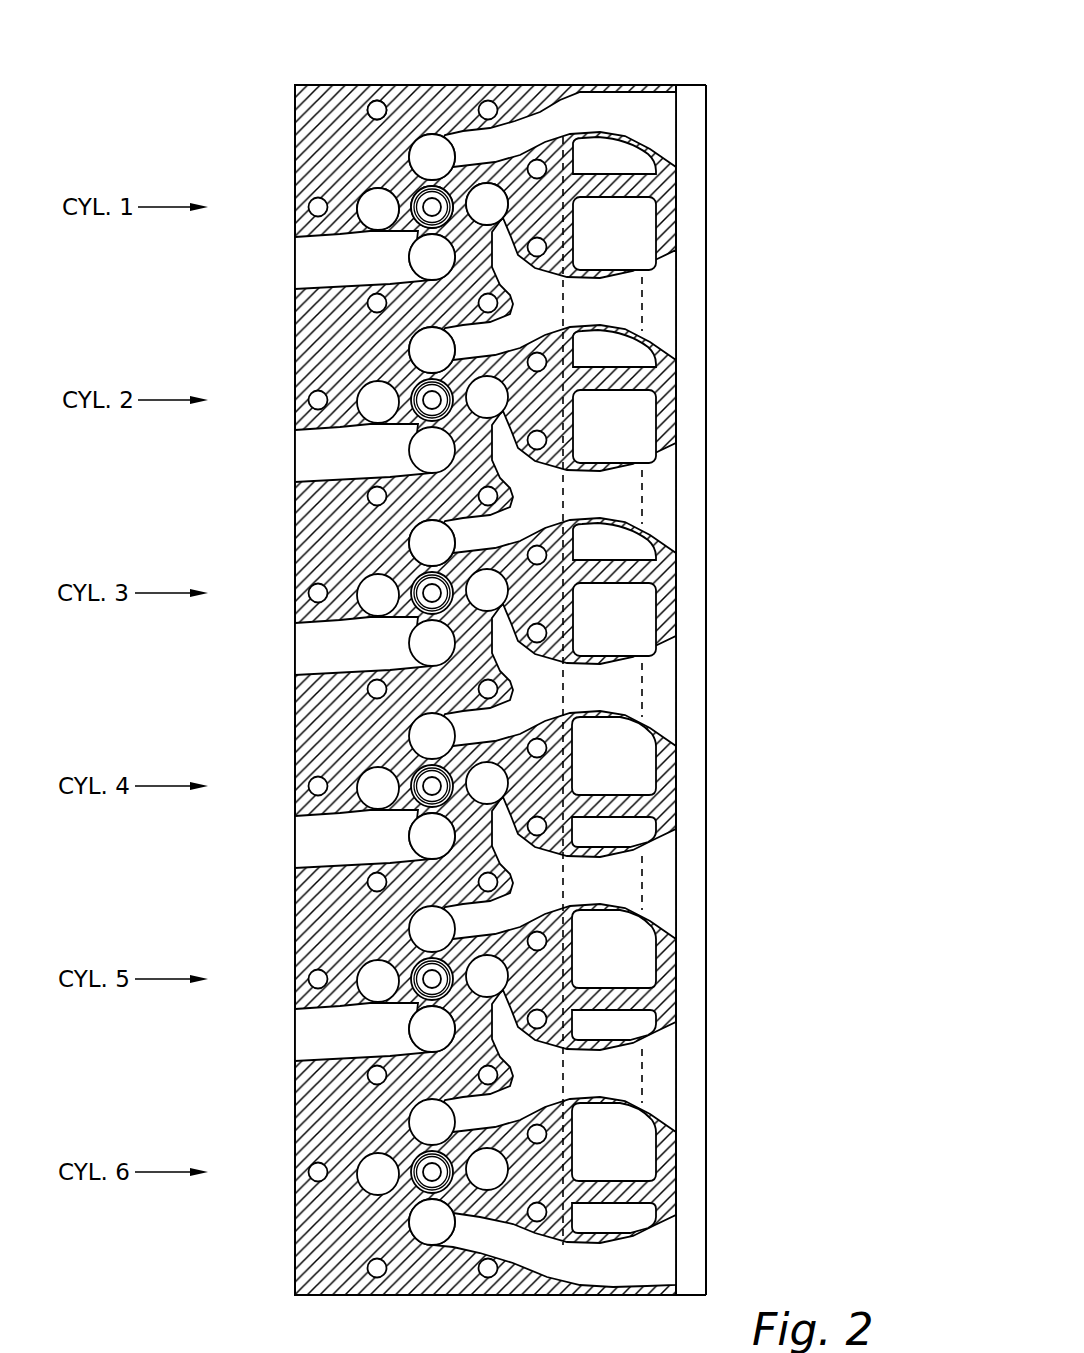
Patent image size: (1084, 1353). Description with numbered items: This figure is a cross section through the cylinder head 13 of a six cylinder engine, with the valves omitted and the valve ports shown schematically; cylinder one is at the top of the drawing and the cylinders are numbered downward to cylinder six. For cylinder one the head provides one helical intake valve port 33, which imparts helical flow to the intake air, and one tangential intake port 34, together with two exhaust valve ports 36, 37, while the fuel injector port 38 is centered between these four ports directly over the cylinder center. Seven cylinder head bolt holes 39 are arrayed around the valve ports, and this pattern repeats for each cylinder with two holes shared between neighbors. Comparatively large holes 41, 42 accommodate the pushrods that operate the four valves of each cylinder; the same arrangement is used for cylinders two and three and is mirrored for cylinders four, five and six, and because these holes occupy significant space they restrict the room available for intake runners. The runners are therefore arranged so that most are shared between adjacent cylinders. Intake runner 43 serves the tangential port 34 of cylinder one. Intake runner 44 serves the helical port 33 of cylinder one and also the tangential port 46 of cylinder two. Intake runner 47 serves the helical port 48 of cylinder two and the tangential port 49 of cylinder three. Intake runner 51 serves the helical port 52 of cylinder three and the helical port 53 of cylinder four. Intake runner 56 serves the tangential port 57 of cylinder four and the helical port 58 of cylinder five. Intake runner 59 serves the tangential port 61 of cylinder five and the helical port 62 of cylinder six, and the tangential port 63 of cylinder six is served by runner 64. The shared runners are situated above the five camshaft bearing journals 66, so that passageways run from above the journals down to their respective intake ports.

The cylinder head 13 is at (312, 555).
The helical intake valve port 33 is at (490, 183).
The tangential intake port 34 is at (437, 134).
The exhaust valve port 36 is at (357, 205).
The exhaust valve port 37 is at (410, 258).
The fuel injector port 38 is at (411, 203).
The cylinder head bolt holes 39 is at (377, 110).
The pushrod hole 41 is at (620, 156).
The pushrod hole 42 is at (620, 243).
The intake runner 43 is at (622, 120).
The intake runner 44 is at (620, 303).
The tangential port 46 is at (410, 348).
The intake runner 47 is at (620, 496).
The helical port 48 is at (513, 400).
The tangential port 49 is at (410, 541).
The intake runner 51 is at (620, 688).
The helical port 52 is at (510, 592).
The helical port 53 is at (508, 790).
The intake runner 56 is at (620, 882).
The tangential port 57 is at (410, 836).
The helical port 58 is at (508, 983).
The intake runner 59 is at (620, 1075).
The tangential port 61 is at (410, 1030).
The helical port 62 is at (508, 1176).
The tangential port 63 is at (410, 1222).
The runner 64 is at (620, 1262).
The camshaft bearing journals 66 is at (642, 322).